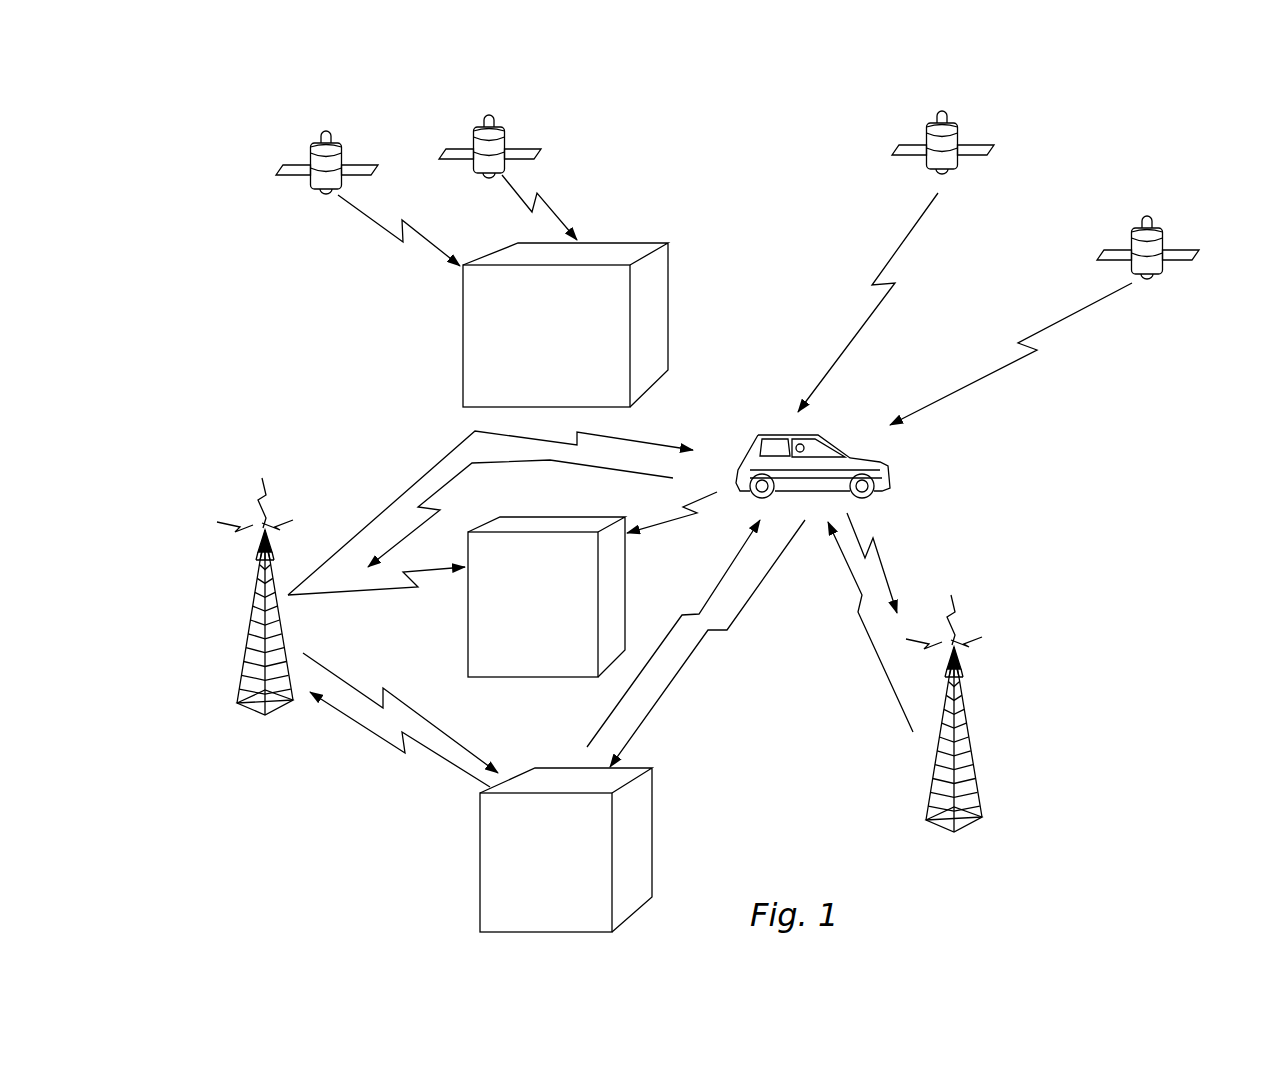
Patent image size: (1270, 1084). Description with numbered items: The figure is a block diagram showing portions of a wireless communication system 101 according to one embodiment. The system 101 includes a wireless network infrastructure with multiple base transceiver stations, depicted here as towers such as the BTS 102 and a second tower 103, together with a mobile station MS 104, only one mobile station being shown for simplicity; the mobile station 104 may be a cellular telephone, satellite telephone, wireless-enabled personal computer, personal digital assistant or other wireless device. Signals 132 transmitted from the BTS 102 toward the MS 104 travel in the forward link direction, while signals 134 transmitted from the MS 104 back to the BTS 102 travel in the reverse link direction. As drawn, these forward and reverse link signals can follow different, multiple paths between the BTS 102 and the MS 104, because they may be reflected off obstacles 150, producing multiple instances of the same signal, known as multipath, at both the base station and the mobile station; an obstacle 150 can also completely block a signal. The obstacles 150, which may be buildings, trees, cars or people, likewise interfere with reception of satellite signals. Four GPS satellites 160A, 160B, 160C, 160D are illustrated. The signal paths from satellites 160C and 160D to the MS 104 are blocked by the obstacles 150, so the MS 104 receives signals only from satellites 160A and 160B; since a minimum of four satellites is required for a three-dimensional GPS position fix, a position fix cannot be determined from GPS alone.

The wireless communication system 101 is at (1140, 523).
The BTS 102 is at (250, 620).
The base station / transmitter tower 103 is at (935, 770).
The mobile station 104 is at (888, 470).
The forward link signals 132 is at (426, 469).
The reverse link signals 134 is at (452, 482).
The obstacle 150 is at (463, 340).
The GPS satellite 160A is at (1163, 236).
The GPS satellite 160B is at (958, 133).
The GPS satellite 160C is at (504, 131).
The GPS satellite 160D is at (342, 150).